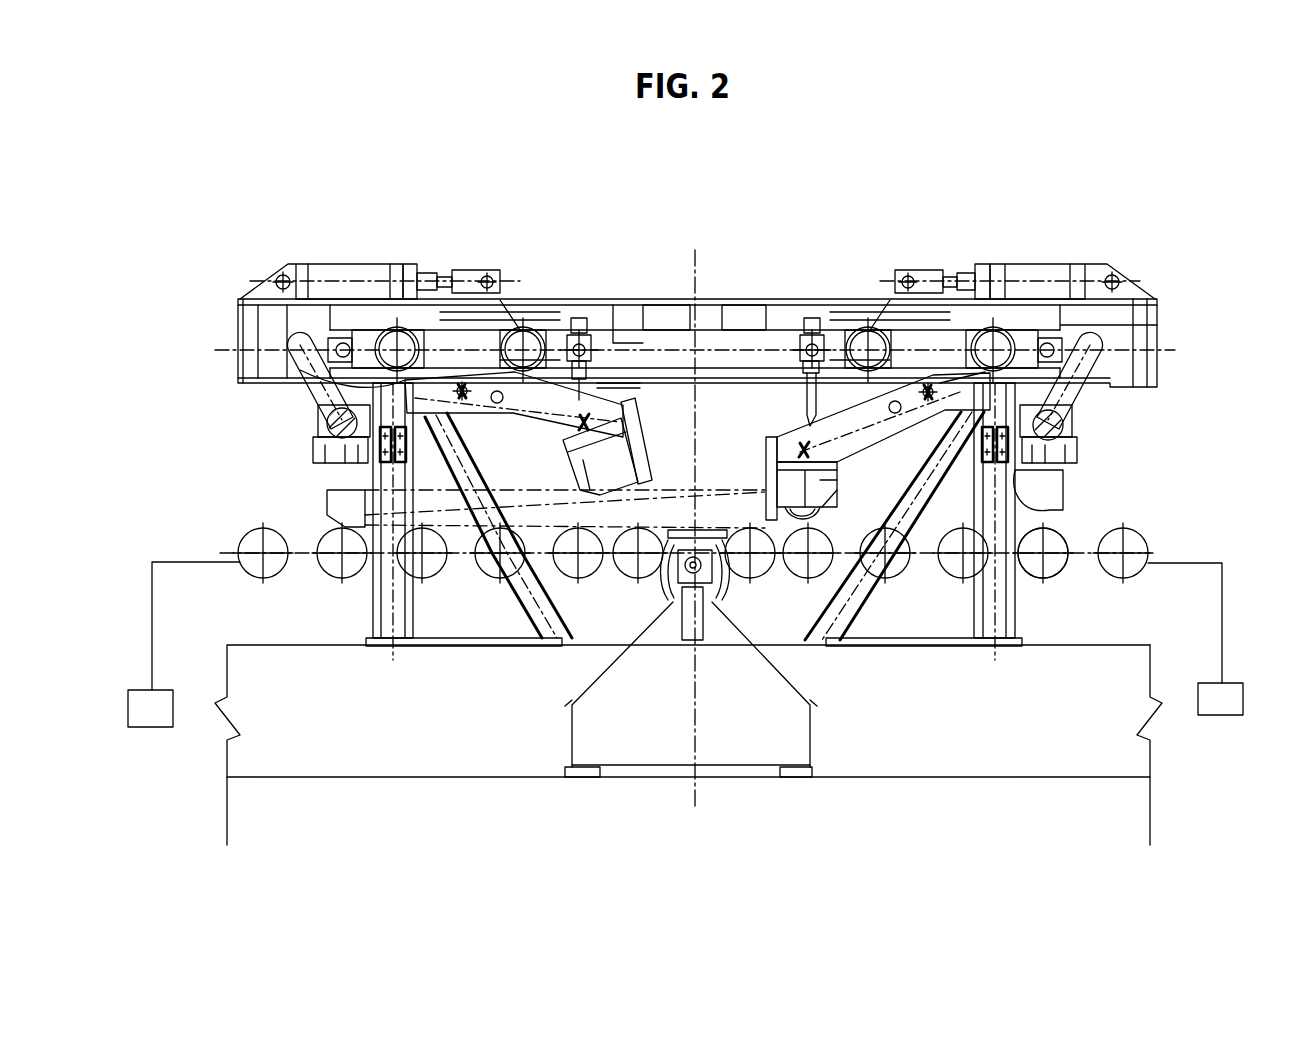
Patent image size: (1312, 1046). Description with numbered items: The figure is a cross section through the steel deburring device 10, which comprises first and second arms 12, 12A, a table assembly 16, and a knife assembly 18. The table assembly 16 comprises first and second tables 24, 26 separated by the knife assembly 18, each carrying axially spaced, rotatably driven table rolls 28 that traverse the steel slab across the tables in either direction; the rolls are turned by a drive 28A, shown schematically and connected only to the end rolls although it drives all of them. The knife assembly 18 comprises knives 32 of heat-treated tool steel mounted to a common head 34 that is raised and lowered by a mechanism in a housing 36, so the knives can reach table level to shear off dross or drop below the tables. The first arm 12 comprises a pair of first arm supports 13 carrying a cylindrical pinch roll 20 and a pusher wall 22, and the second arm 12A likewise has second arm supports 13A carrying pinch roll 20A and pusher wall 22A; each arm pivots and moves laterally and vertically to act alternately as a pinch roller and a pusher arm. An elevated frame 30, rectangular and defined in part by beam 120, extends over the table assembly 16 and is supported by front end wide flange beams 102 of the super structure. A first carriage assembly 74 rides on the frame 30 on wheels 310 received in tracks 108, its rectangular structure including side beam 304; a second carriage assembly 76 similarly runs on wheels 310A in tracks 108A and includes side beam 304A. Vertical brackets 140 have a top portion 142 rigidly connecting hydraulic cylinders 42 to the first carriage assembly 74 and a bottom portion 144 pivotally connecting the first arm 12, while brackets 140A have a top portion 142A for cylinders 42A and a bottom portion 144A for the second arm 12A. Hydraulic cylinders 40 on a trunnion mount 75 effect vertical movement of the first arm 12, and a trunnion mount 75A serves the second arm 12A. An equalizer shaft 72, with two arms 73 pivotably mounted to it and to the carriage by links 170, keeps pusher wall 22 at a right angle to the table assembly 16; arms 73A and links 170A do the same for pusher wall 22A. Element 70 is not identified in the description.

The steel deburring device 10 is at (851, 205).
The first arm 12 is at (535, 305).
The second arm 12A is at (852, 422).
The first arm supports 13 is at (493, 413).
The second arm supports 13A is at (878, 440).
The table assembly 16 is at (298, 510).
The knife assembly 18 is at (565, 742).
The cylindrical pinch roll 20 is at (647, 478).
The cylindrical pinch roll 20A is at (818, 513).
The pusher wall 22 is at (645, 433).
The pusher wall 22A is at (763, 480).
The first table 24 is at (338, 591).
The second table 26 is at (1045, 584).
The table rolls 28 is at (253, 530).
The drive 28A is at (140, 722).
The elevated frame 30 is at (732, 270).
The knives 32 is at (733, 592).
The common head 34 is at (668, 585).
The pedestal 36 is at (762, 735).
The hydraulic cylinders 40 is at (807, 300).
The hydraulic cylinders 42 is at (358, 270).
The hydraulic cylinders 42A is at (1053, 280).
The bearing 70 is at (518, 328).
The equalizer shaft 72 is at (313, 435).
The arms 73 is at (297, 397).
The arms 73A is at (1088, 390).
The first carriage assembly 74 is at (510, 325).
The trunnion mount 75 is at (623, 305).
The trunnion mount 75A is at (827, 300).
The second carriage assembly 76 is at (990, 300).
The front end steel wide flange beams 102 is at (370, 595).
The tracks 108 is at (682, 300).
The tracks 108A is at (750, 300).
The beam 120 is at (687, 293).
The vertical brackets 140 is at (505, 330).
The vertical brackets 140A is at (870, 328).
The top portion 142 is at (513, 400).
The top portion 142A is at (897, 300).
The bottom portion 144 is at (297, 342).
The link 144A is at (933, 440).
The links 170 is at (337, 277).
The links 170A is at (1153, 363).
The side beam 304 is at (533, 293).
The side beam 304A is at (1020, 300).
The wheels 310 is at (400, 338).
The wheels 310A is at (922, 300).